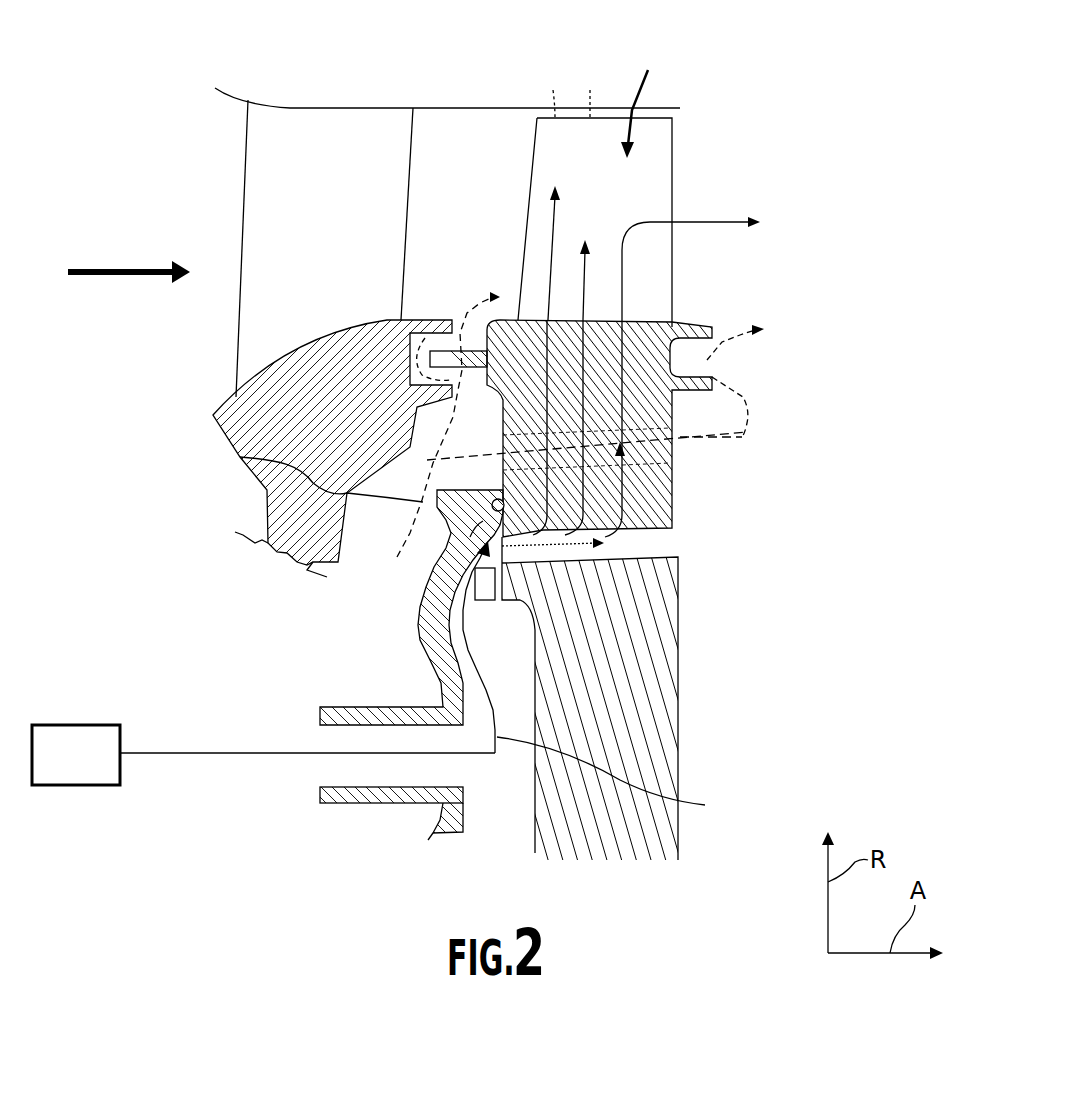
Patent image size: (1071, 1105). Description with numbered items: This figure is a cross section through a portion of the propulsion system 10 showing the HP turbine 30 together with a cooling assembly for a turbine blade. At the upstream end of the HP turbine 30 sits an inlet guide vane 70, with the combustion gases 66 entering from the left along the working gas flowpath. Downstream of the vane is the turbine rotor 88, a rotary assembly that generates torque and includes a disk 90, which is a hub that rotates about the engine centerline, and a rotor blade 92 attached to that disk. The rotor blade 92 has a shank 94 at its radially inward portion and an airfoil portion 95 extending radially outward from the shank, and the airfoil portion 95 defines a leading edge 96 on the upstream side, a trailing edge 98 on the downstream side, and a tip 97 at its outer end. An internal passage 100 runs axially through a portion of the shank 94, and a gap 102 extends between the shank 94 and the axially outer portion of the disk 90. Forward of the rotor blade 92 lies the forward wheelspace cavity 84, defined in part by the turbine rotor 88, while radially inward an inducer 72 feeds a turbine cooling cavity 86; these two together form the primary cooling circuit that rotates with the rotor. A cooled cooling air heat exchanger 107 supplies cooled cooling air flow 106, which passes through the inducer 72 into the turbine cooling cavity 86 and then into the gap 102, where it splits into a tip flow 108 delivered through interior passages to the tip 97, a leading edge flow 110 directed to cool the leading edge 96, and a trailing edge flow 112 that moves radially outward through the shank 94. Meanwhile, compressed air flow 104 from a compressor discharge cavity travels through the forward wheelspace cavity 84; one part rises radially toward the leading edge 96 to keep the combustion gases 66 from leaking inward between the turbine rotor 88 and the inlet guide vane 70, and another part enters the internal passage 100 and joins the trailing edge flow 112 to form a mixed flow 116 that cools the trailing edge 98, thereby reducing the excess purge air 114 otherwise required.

The propulsion system 10 is at (178, 112).
The HP turbine 30 is at (418, 68).
The combustion gases 66 is at (117, 268).
The inlet guide vane 70 is at (258, 240).
The inducer 72 is at (360, 707).
The forward wheelspace cavity 84 is at (416, 490).
The turbine cooling cavity 86 is at (523, 655).
The turbine rotor 88 is at (641, 102).
The disk 90 is at (682, 760).
The rotor blade 92 is at (590, 118).
The shank 94 is at (672, 492).
The airfoil portion 95 is at (585, 195).
The leading edge 96 is at (537, 150).
The tip 97 is at (555, 118).
The trailing edge 98 is at (672, 145).
The internal passage 100 is at (672, 410).
The gap 102 is at (665, 557).
The compressed air flow 104 is at (240, 457).
The cooled cooling air flow 106 is at (300, 753).
The cooled cooling air heat exchanger 107 is at (73, 725).
The tip flow 108 is at (585, 272).
The leading edge flow 110 is at (553, 222).
The trailing edge flow 112 is at (607, 540).
The purge air 114 is at (725, 437).
The mixed flow 116 is at (700, 222).